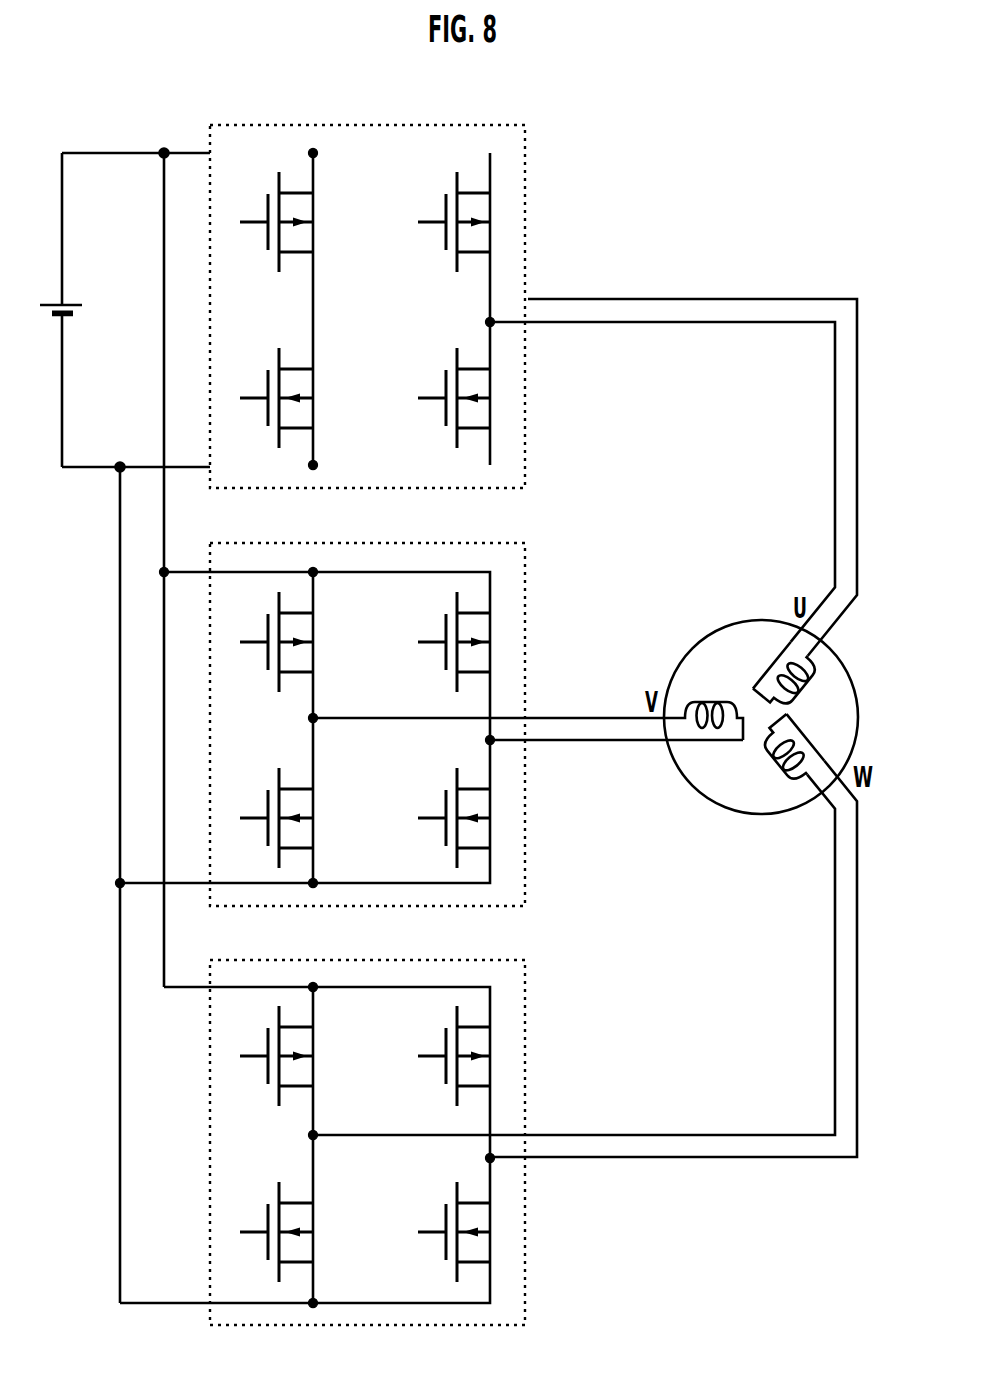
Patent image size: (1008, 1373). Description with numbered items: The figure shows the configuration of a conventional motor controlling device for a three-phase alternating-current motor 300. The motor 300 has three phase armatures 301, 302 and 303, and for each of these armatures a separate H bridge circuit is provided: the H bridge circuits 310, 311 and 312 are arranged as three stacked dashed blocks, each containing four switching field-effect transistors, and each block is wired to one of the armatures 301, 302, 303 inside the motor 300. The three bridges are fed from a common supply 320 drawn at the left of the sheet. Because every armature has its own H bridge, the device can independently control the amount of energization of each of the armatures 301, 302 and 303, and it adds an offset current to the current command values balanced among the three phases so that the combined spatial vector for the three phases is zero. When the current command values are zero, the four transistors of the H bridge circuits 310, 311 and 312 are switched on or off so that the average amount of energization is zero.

The three-phase alternating-current motor 300 is at (731, 622).
The armature 301 is at (803, 681).
The armature 302 is at (727, 700).
The armature 303 is at (782, 752).
The H bridge circuit 310 is at (457, 125).
The H bridge circuit 311 is at (457, 543).
The H bridge circuit 312 is at (457, 960).
The battery (power supply) 320 is at (75, 305).